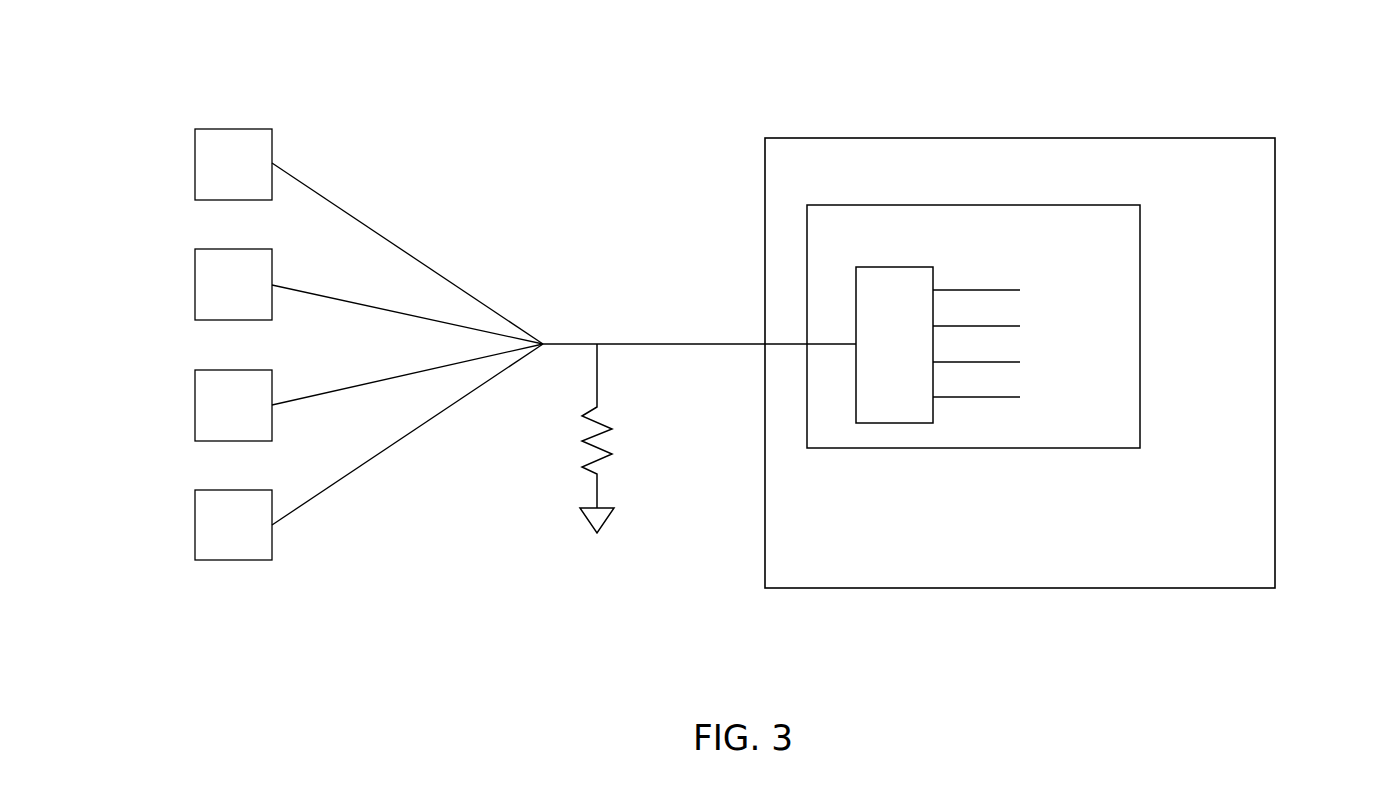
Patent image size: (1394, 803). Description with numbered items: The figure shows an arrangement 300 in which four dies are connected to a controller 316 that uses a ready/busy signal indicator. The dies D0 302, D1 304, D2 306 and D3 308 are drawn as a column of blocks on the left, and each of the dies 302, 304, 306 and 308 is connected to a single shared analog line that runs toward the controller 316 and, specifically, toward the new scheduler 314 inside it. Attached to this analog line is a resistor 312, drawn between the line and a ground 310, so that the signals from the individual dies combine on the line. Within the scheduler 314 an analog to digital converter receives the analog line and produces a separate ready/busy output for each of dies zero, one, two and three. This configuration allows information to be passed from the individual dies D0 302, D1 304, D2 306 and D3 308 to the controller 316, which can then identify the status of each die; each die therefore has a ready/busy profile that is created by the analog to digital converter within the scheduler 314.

The system 300 is at (1268, 70).
The die D0 302 is at (195, 164).
The die D1 304 is at (195, 285).
The die D2 306 is at (195, 405).
The die D3 308 is at (195, 525).
The ground 310 is at (611, 522).
The resistor 312 is at (645, 436).
The scheduler 314 is at (1123, 246).
The controller 316 is at (1245, 183).